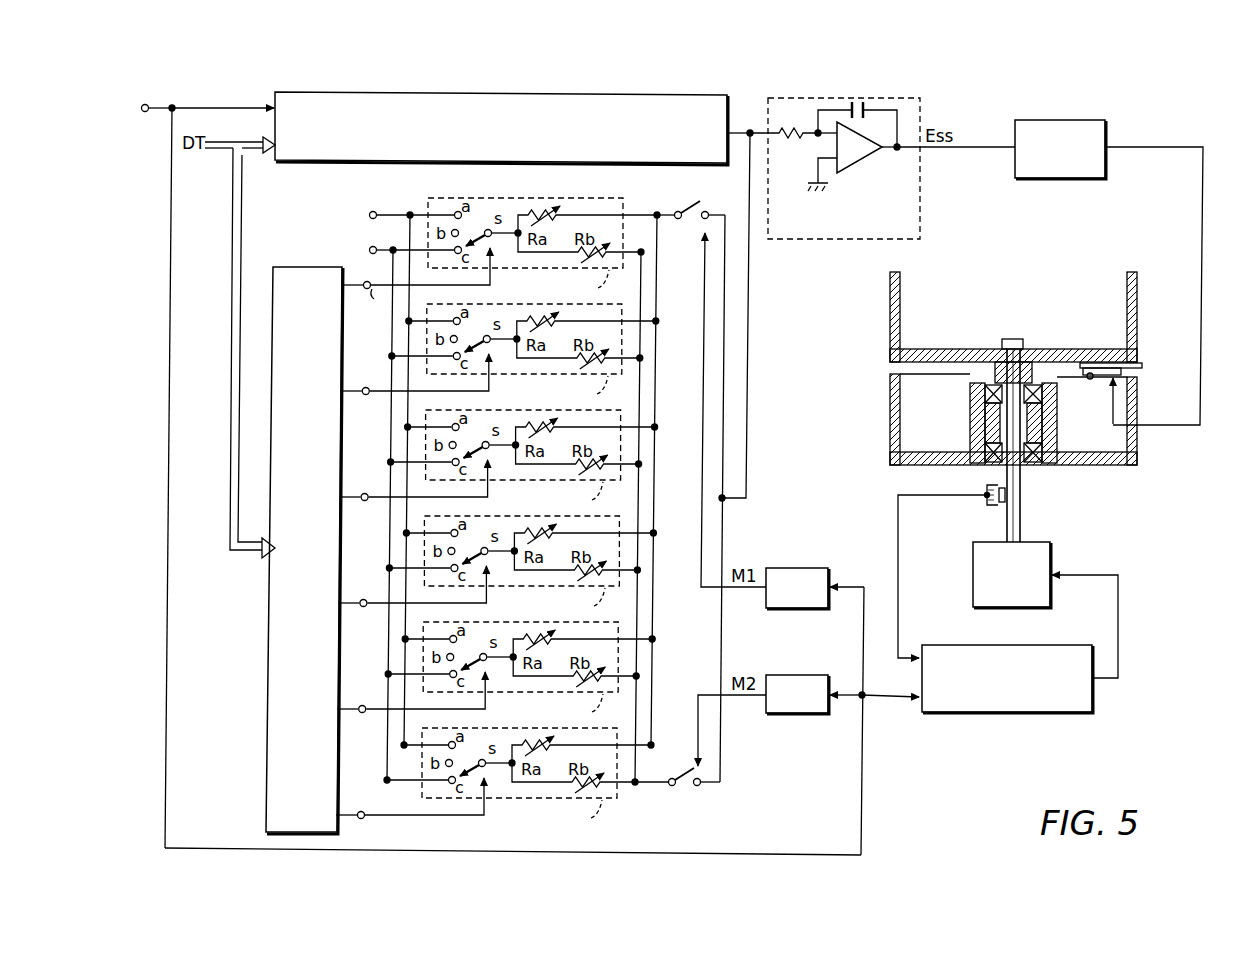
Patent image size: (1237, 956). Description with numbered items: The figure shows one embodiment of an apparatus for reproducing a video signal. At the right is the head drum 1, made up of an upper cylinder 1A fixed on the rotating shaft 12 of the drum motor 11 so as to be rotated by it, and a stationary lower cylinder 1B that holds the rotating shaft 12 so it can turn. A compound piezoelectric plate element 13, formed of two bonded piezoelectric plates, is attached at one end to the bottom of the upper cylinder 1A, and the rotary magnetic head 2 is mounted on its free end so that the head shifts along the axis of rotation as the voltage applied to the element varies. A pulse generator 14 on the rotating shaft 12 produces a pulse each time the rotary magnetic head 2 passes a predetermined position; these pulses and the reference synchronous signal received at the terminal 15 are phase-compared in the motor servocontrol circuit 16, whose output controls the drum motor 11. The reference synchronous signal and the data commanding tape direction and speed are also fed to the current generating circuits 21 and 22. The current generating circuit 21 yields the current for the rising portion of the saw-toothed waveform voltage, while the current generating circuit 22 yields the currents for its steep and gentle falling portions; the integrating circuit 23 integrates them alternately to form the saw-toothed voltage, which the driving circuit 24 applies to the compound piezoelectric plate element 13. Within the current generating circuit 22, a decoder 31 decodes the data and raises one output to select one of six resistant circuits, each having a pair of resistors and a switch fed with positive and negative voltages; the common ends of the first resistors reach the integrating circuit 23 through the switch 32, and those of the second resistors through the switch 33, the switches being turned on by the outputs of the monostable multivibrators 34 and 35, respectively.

The head drum 1 is at (846, 333).
The upper cylinder 1A is at (890, 342).
The lower cylinder 1B is at (890, 391).
The rotary magnetic head 2 is at (1140, 364).
The drum motor 11 is at (973, 552).
The rotating shaft 12 is at (1020, 514).
The compound piezoelectric plate element 13 is at (1140, 374).
The pulse generator 14 is at (986, 506).
The terminal 15 is at (143, 113).
The motor servocontrol circuit 16 is at (934, 645).
The current generating circuit 21 is at (315, 165).
The current generating circuit 22 is at (224, 746).
The integrating circuit 23 is at (920, 216).
The driving circuit 24 is at (1093, 180).
The decoder 31 is at (293, 266).
The switch 32 is at (689, 208).
The switch 33 is at (676, 766).
The monostable multivibrator 34 is at (786, 568).
The monostable multivibrator 35 is at (786, 675).